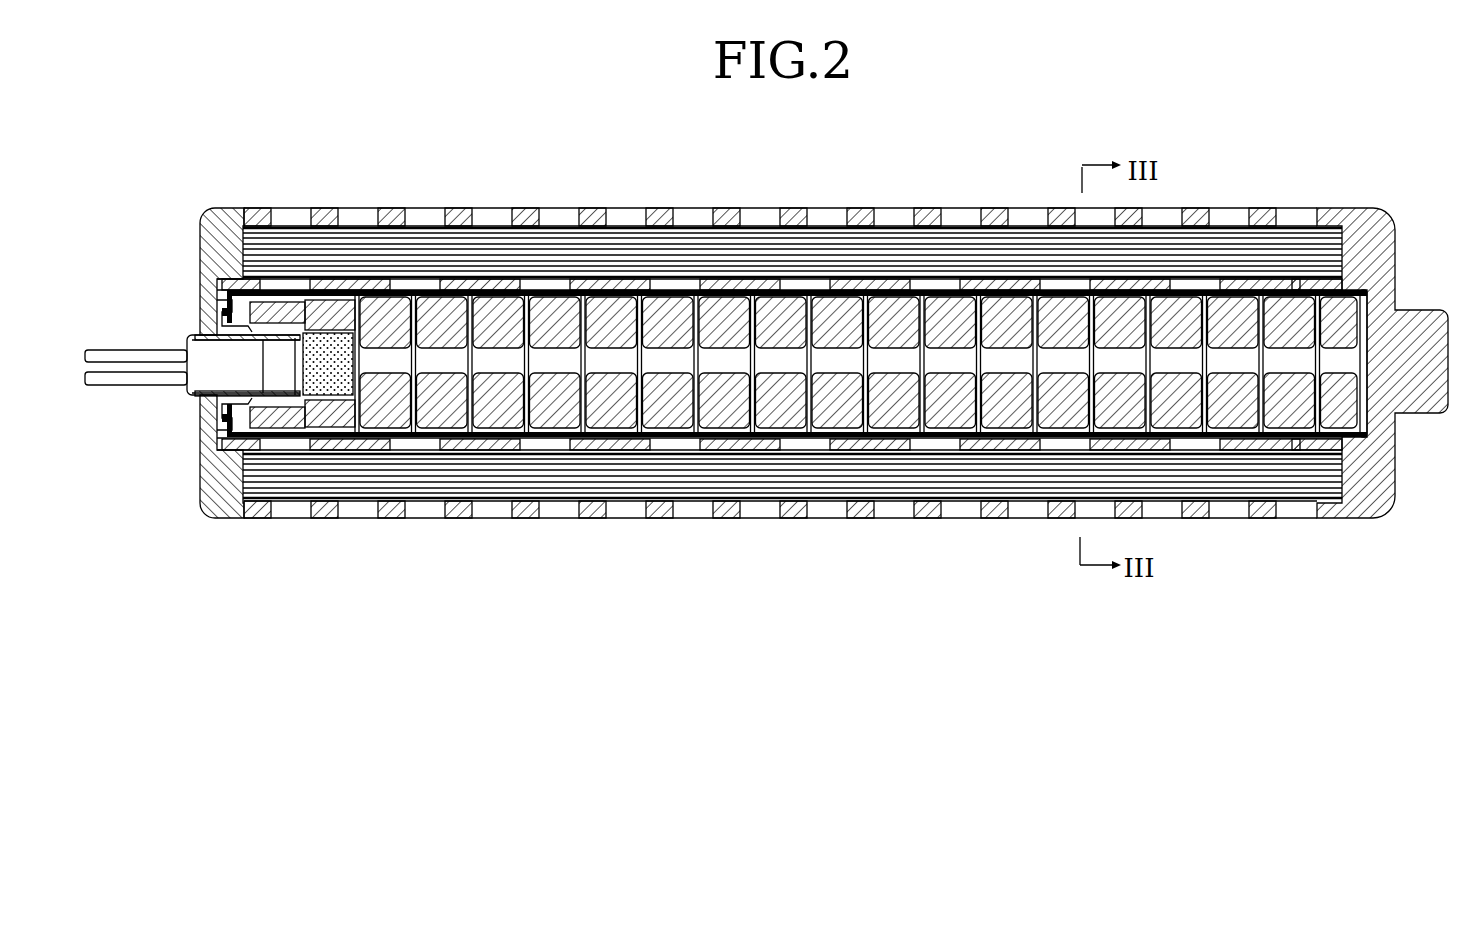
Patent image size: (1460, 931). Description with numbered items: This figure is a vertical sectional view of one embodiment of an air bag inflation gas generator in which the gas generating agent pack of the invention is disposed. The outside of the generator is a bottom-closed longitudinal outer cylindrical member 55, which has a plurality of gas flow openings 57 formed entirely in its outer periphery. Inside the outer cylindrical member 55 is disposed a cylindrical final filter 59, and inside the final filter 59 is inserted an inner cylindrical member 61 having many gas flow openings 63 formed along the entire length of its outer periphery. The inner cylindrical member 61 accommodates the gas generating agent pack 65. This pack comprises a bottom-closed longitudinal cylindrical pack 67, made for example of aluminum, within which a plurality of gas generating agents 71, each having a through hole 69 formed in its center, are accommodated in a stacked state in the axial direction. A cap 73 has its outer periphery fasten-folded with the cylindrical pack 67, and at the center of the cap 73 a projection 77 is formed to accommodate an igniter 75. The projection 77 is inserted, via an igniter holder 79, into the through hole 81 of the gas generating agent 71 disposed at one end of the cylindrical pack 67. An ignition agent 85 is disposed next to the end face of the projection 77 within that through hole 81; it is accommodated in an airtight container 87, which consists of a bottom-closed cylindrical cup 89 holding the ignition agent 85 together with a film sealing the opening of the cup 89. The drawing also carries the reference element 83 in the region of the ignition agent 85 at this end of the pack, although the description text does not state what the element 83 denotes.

The outer cylindrical member 55 is at (452, 224).
The gas flow openings 57 is at (755, 216).
The final filter 59 is at (558, 262).
The inner cylindrical member 61 is at (312, 282).
The gas flow openings 63 is at (930, 288).
The gas generating agent pack 65 is at (925, 440).
The cylindrical pack 67 is at (420, 432).
The through hole 69 is at (438, 405).
The gas generating agents 71 is at (553, 413).
The cap 73 is at (210, 405).
The igniter 75 is at (245, 468).
The projection 77 is at (273, 440).
The igniter holder 79 is at (207, 320).
The through hole 81 is at (276, 380).
The sealing compound 83 is at (335, 378).
The ignition agent 85 is at (350, 440).
The airtight container 87 is at (328, 330).
The cup 89 is at (205, 268).